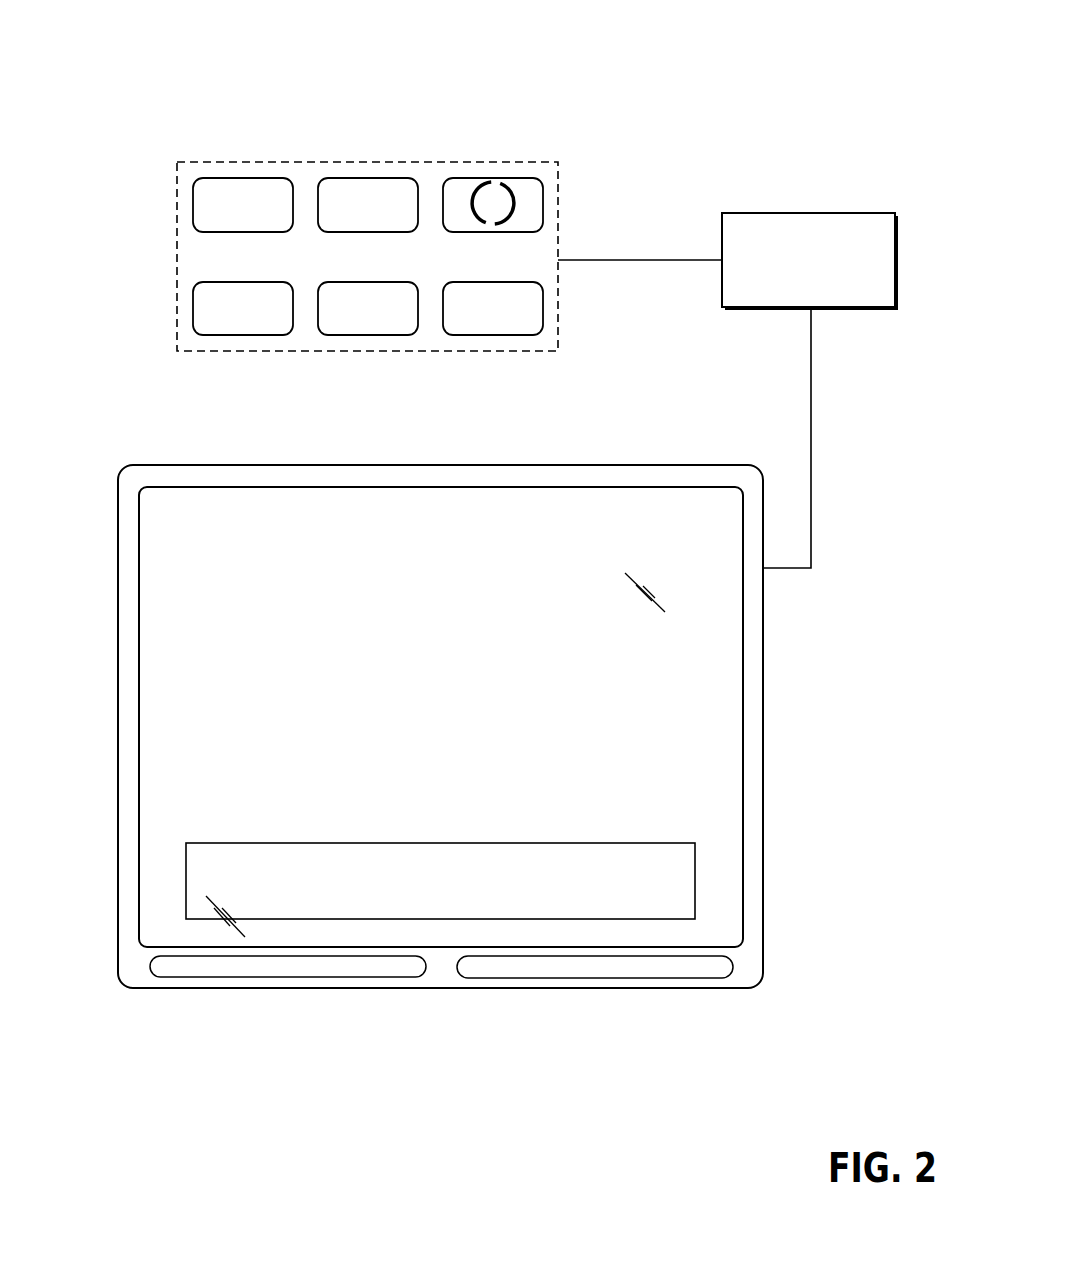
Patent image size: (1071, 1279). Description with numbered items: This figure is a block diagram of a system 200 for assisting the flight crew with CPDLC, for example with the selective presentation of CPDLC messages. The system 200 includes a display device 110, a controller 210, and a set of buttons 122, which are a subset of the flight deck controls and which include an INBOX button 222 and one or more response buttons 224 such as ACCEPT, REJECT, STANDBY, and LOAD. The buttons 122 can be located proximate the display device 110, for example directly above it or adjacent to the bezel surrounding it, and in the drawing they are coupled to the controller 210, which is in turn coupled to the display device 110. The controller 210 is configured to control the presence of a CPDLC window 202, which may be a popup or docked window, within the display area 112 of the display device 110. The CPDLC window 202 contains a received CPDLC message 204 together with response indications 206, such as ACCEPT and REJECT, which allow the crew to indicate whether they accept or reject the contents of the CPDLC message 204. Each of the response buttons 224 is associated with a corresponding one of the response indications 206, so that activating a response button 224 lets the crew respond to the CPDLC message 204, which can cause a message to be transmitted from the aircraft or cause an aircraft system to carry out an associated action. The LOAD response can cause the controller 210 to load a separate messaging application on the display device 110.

The system 200 is at (150, 48).
The buttons 122 is at (177, 191).
The INBOX button 222 is at (234, 177).
The response buttons 224 is at (407, 177).
The controller 210 is at (837, 293).
The display device 110 is at (665, 465).
The display area 112 is at (218, 534).
The CPDLC window 202 is at (186, 883).
The CPDLC message 204 is at (556, 886).
The response indications 206 is at (720, 857).